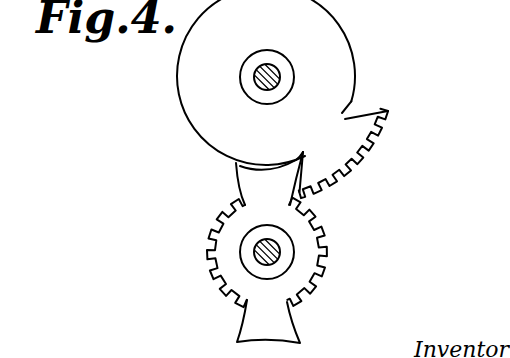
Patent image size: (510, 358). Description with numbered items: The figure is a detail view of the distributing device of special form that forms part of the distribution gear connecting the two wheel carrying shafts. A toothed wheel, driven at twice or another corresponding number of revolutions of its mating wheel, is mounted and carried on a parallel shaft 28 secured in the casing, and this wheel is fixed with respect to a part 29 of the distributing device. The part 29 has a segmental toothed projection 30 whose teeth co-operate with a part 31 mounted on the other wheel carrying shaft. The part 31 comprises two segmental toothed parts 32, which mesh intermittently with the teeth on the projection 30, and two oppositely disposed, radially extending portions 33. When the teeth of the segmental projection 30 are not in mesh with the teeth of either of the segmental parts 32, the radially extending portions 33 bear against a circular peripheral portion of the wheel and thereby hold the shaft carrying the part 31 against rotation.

The parallel shaft 28 is at (265, 67).
The part of distributing device 29 is at (311, 27).
The segmental toothed projection 30 is at (342, 115).
The part mounted on the shaft 31 is at (295, 233).
The segmental toothed parts 32 is at (212, 231).
The radially extending portions 33 is at (258, 180).